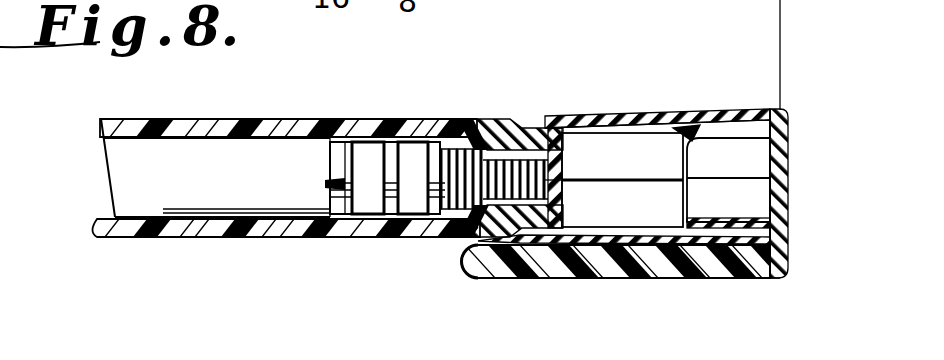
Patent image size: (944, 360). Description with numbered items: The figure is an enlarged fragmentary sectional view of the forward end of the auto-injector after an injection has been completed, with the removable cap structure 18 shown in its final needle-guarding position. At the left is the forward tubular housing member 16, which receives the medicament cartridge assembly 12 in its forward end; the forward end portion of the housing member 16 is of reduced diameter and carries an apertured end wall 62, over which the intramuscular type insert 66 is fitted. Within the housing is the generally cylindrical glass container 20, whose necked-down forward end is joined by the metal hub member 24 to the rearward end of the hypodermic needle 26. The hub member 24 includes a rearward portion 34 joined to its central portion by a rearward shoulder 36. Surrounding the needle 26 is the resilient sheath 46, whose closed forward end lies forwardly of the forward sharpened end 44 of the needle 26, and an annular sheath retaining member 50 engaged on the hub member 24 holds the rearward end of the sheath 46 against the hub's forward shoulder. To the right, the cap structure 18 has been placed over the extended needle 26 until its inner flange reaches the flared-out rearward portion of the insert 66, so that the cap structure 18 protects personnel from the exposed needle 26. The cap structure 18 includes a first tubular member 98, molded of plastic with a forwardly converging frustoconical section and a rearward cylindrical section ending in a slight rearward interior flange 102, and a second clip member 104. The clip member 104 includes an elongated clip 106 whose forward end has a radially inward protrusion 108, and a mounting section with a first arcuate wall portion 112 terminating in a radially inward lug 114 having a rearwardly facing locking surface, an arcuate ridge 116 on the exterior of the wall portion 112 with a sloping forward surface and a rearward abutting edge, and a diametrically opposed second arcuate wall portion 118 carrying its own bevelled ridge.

The medicament cartridge assembly 12 is at (292, 125).
The tubular housing member 16 is at (216, 119).
The cap structure 18 is at (708, 108).
The container 20 is at (202, 205).
The hub member 24 is at (330, 200).
The hypodermic needle 26 is at (598, 176).
The rearward portion 34 is at (360, 238).
The rearward shoulder 36 is at (390, 119).
The forward sharpened end 44 is at (728, 180).
The resilient sheath 46 is at (455, 237).
The sheath retaining member 50 is at (497, 115).
The apertured end wall 62 is at (562, 148).
The insert 66 is at (562, 126).
The first tubular member 98 is at (662, 112).
The rearward interior flange 102 is at (758, 262).
The clip member 104 is at (512, 119).
The clip 106 is at (665, 262).
The protrusion 108 is at (535, 250).
The first arcuate wall portion 112 is at (697, 133).
The lug 114 is at (688, 122).
The arcuate ridge 116 is at (738, 110).
The second arcuate wall portion 118 is at (728, 202).